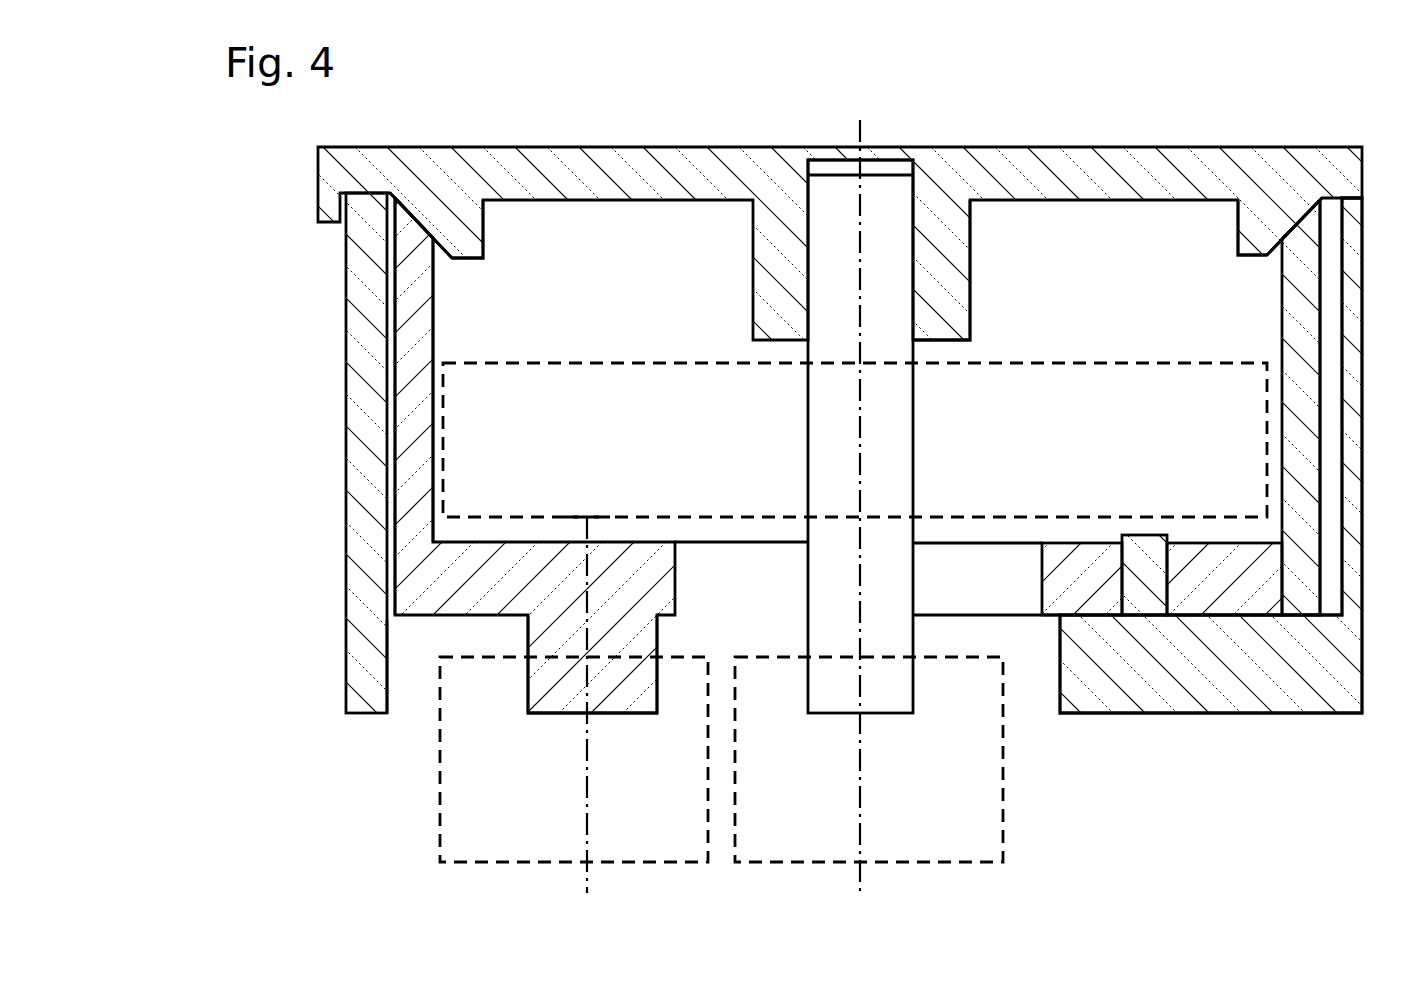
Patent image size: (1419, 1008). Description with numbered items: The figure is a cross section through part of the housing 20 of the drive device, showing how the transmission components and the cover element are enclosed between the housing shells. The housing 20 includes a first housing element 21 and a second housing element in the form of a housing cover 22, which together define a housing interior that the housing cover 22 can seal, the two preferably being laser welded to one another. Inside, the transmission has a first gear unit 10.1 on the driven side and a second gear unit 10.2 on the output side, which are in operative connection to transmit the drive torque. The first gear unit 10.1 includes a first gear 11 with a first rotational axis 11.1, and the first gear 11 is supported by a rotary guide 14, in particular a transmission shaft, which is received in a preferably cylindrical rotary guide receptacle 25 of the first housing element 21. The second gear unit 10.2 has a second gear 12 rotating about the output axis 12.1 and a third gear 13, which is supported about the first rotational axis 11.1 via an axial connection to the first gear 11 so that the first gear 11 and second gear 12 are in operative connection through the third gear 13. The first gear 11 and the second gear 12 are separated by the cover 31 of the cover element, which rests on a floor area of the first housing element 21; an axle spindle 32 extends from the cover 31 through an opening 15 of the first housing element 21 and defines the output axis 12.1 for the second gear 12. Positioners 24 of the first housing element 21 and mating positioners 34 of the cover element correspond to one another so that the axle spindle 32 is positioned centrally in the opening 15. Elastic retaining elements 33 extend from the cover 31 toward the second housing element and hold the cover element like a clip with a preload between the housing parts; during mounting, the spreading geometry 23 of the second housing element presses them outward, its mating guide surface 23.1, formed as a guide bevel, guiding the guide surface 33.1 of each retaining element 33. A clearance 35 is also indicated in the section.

The first gear unit 10.1 is at (422, 372).
The second gear unit 10.2 is at (1048, 773).
The first gear 11 is at (445, 512).
The first rotational axis 11.1 is at (858, 700).
The second gear 12 is at (440, 858).
The output axis 12.1 is at (590, 522).
The third gear 13 is at (1003, 790).
The rotary guide 14 is at (888, 695).
The opening 15 is at (420, 698).
The housing 20 is at (285, 200).
The first housing element 21 is at (360, 405).
The housing cover 22 is at (620, 165).
The spreading geometry 23 is at (520, 238).
The mating guide surface 23.1 is at (405, 215).
The positioner 24 is at (1115, 570).
The rotary guide receptacle 25 is at (1000, 290).
The cover 31 is at (500, 572).
The axle spindle 32 is at (640, 695).
The retaining element 33 is at (408, 315).
The guide surface 33.1 is at (430, 255).
The mating positioner 34 is at (1107, 590).
The clearance 35 is at (935, 600).